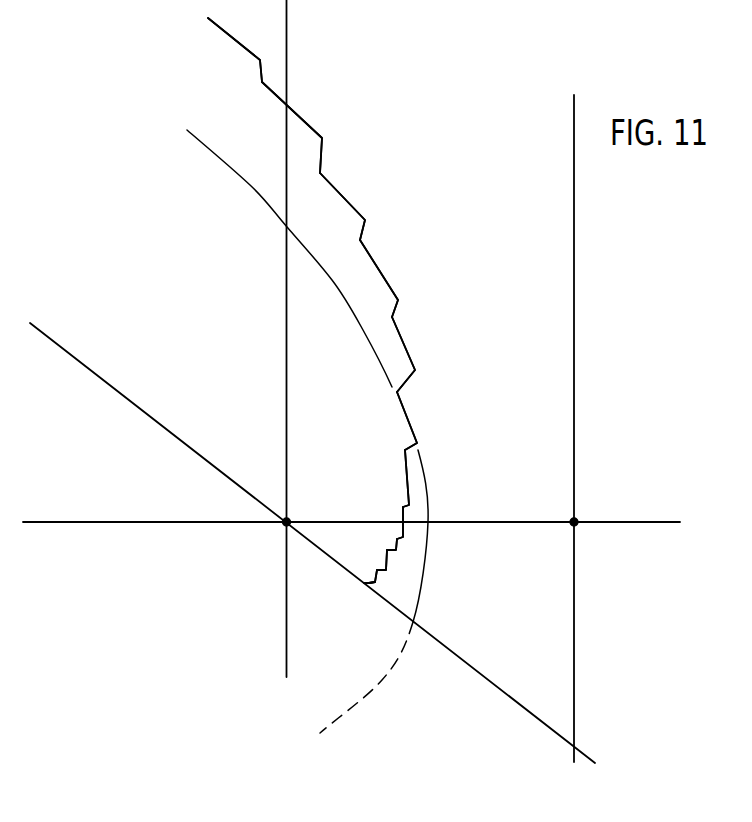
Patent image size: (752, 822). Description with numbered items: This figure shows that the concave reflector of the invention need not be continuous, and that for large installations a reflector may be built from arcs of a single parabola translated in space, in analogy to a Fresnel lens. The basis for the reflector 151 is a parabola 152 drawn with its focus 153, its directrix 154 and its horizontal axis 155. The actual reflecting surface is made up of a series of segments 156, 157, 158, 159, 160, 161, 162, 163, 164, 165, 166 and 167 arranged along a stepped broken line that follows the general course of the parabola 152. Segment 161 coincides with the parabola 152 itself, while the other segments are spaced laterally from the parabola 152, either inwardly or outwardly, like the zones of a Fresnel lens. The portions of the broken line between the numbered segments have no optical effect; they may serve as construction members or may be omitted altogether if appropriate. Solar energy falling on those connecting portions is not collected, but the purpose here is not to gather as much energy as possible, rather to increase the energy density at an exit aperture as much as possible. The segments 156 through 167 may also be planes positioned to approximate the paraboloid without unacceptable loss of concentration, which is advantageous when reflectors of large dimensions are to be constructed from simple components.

The reflector 151 is at (434, 177).
The parabola 152 is at (247, 188).
The focus 153 is at (283, 525).
The directrix 154 is at (577, 237).
The horizontal axis 155 is at (117, 523).
The segment 156 is at (249, 51).
The segment 157 is at (300, 117).
The segment 158 is at (332, 185).
The segment 159 is at (381, 269).
The segment 160 is at (403, 340).
The segment 161 is at (408, 419).
The segment 162 is at (412, 476).
The segment 163 is at (405, 516).
The segment 164 is at (402, 532).
The segment 165 is at (398, 549).
The segment 166 is at (388, 562).
The segment 167 is at (377, 581).